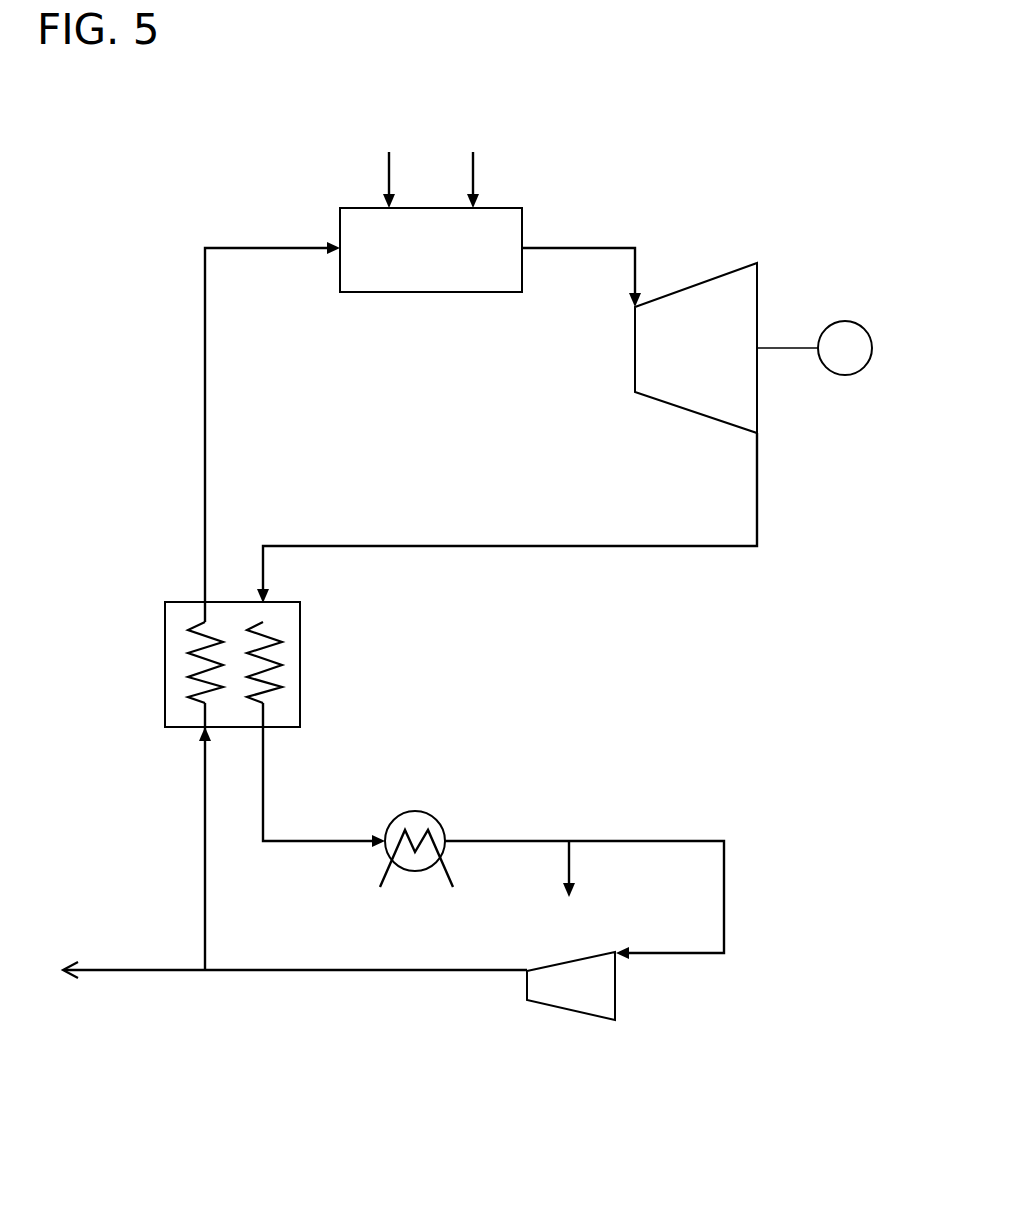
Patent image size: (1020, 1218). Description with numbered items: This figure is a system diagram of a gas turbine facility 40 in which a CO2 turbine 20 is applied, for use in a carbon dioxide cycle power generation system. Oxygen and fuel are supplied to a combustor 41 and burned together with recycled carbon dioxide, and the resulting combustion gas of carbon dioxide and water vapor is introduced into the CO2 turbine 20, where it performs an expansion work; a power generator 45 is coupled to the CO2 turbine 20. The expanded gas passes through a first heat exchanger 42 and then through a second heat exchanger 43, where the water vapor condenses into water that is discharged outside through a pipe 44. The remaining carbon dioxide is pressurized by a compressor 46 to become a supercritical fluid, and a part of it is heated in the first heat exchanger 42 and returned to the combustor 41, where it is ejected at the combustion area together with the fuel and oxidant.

The gas turbine facility 40 is at (776, 160).
The combustor 41 is at (509, 208).
The CO2 turbine 20 is at (692, 279).
The power generator 45 is at (846, 322).
The first heat exchanger 42 is at (302, 660).
The second heat exchanger 43 is at (421, 812).
The pipe 44 is at (574, 862).
The compressor 46 is at (617, 990).